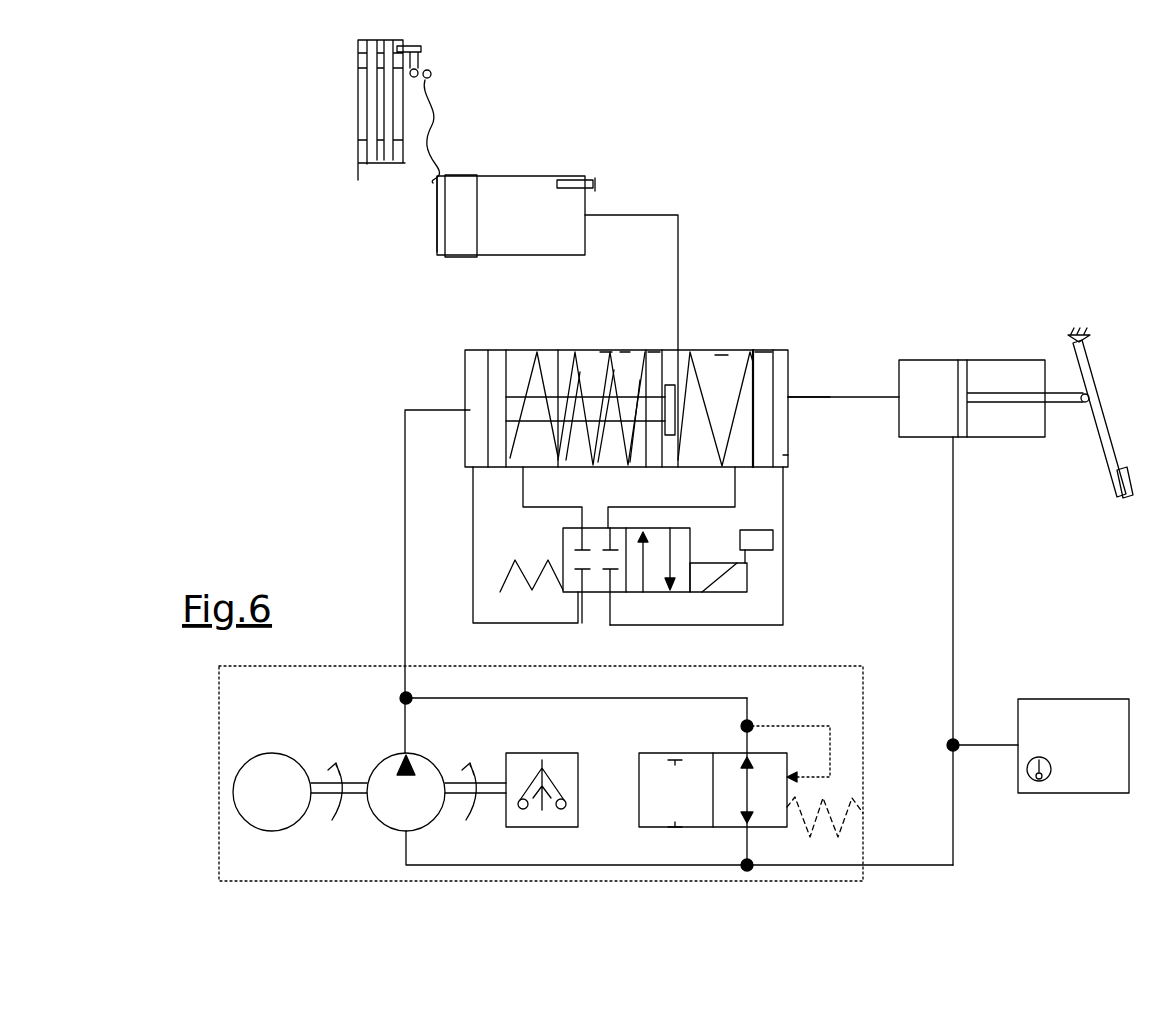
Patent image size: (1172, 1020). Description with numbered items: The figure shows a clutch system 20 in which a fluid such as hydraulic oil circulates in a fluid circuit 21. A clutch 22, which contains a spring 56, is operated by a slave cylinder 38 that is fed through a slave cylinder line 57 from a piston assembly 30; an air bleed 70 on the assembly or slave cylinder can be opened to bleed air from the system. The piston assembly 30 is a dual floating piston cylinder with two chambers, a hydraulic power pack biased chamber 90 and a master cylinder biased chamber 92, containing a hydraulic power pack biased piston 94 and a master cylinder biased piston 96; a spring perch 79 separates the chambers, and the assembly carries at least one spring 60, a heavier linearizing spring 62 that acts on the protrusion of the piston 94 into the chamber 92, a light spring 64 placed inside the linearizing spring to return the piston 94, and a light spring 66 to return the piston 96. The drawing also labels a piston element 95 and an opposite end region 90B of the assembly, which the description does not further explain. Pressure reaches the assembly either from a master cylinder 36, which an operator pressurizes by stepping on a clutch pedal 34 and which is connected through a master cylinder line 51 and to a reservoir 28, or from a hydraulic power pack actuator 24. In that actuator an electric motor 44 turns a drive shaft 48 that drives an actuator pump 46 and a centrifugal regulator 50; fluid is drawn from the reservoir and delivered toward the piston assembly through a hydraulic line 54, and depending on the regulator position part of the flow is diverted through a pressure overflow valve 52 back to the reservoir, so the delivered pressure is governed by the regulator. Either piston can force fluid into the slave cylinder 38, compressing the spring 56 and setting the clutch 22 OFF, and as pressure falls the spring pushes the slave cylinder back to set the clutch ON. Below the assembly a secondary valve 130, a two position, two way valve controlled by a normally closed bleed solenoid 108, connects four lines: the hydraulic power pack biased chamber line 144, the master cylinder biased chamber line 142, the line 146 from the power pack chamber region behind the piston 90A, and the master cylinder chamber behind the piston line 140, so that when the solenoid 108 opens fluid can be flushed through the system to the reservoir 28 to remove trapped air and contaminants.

The clutch system 20 is at (945, 240).
The fluid circuit 21 is at (815, 397).
The clutch 22 is at (400, 46).
The hydraulic power pack actuator 24 is at (218, 763).
The reservoir 28 is at (1129, 699).
The piston assembly 30 is at (486, 350).
The clutch pedal 34 is at (1105, 413).
The master cylinder 36 is at (946, 360).
The slave cylinder 38 is at (455, 176).
The electric motor 44 is at (243, 820).
The actuator pump 46 is at (392, 757).
The drive shaft 48 is at (312, 783).
The centrifugal regulator 50 is at (548, 753).
The master cylinder line 51 is at (955, 582).
The pressure overflow valve 52 is at (682, 753).
The hydraulic line 54 is at (404, 585).
The spring 56 is at (426, 95).
The slave cylinder line 57 is at (680, 216).
The spring 60 is at (538, 366).
The linearizing spring 62 is at (573, 350).
The hydraulic power pack biased chamber light spring 64 is at (610, 356).
The master cylinder biased chamber light spring 66 is at (690, 354).
The air bleed 70 is at (592, 180).
The spring perch 79 is at (653, 351).
The hydraulic power pack biased chamber 90 is at (625, 357).
The hydraulic power pack actuator biased chamber behind the piston 90A is at (470, 372).
The housing second end 90B is at (785, 454).
The master cylinder biased chamber 92 is at (722, 364).
The hydraulic power pack biased piston 94 is at (518, 396).
The piston 95 is at (667, 383).
The master cylinder biased piston 96 is at (762, 359).
The bleed solenoid 108 is at (772, 530).
The secondary valve 130 is at (596, 527).
The master cylinder biased chamber behind the piston line 140 is at (800, 575).
The master cylinder biased chamber line 142 is at (655, 507).
The hydraulic power pack biased chamber line 144 is at (540, 510).
The hydraulic power pack actuator biased chamber behind the piston line 146 is at (472, 547).